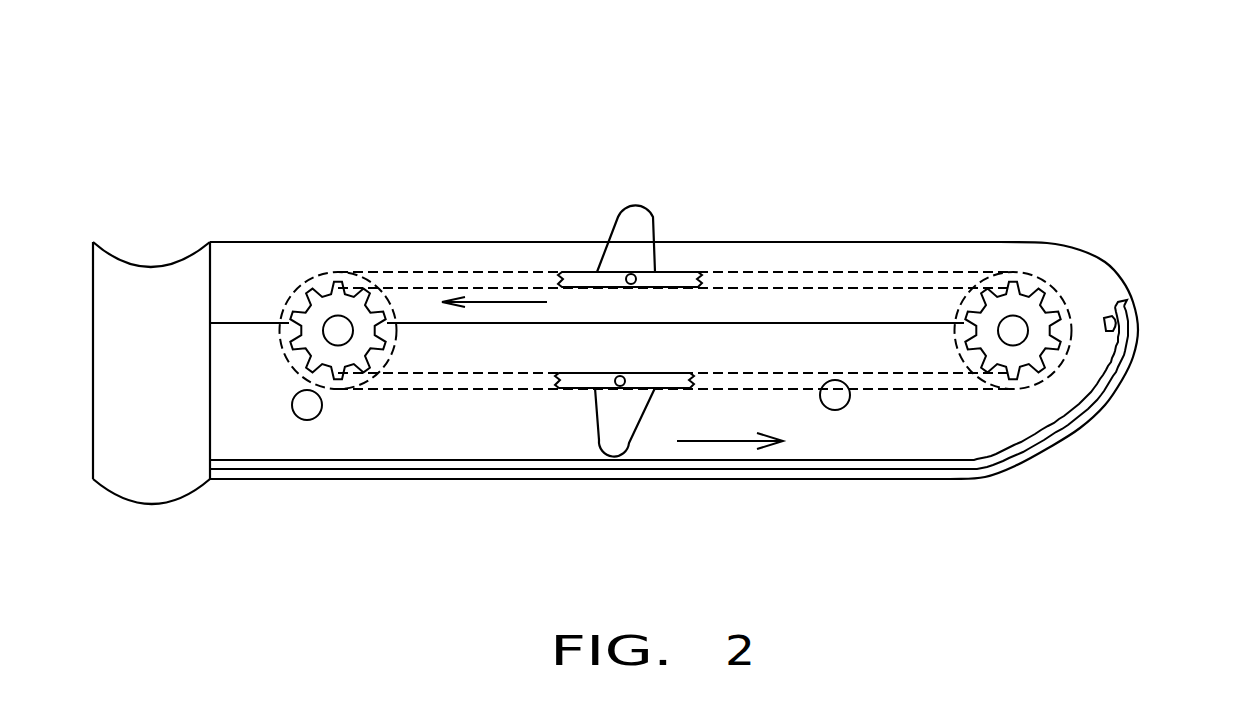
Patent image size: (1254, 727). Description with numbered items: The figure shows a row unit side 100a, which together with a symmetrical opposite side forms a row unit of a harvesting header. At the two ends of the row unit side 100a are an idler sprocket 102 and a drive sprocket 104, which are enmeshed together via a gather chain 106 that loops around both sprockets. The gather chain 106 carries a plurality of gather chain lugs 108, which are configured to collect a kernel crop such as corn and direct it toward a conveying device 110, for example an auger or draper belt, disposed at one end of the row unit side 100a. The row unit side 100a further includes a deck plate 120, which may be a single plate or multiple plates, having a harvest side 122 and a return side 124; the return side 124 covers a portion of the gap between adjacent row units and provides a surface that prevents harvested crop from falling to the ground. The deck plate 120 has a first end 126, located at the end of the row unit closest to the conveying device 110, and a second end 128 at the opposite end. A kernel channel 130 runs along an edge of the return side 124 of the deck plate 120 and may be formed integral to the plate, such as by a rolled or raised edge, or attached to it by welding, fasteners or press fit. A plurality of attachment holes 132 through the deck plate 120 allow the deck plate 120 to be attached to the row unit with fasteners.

The row unit side 100a is at (668, 130).
The idler sprocket 102 is at (1045, 375).
The drive sprocket 104 is at (303, 350).
The gather chain 106 is at (665, 385).
The gather chain lug 108 is at (618, 452).
The conveying device 110 is at (153, 507).
The deck plate 120 is at (822, 250).
The harvest side 122 is at (898, 263).
The return side 124 is at (975, 440).
The first end 126 is at (209, 275).
The second end 128 is at (1138, 310).
The kernel channel 130 is at (337, 470).
The attachment hole 132 is at (845, 407).